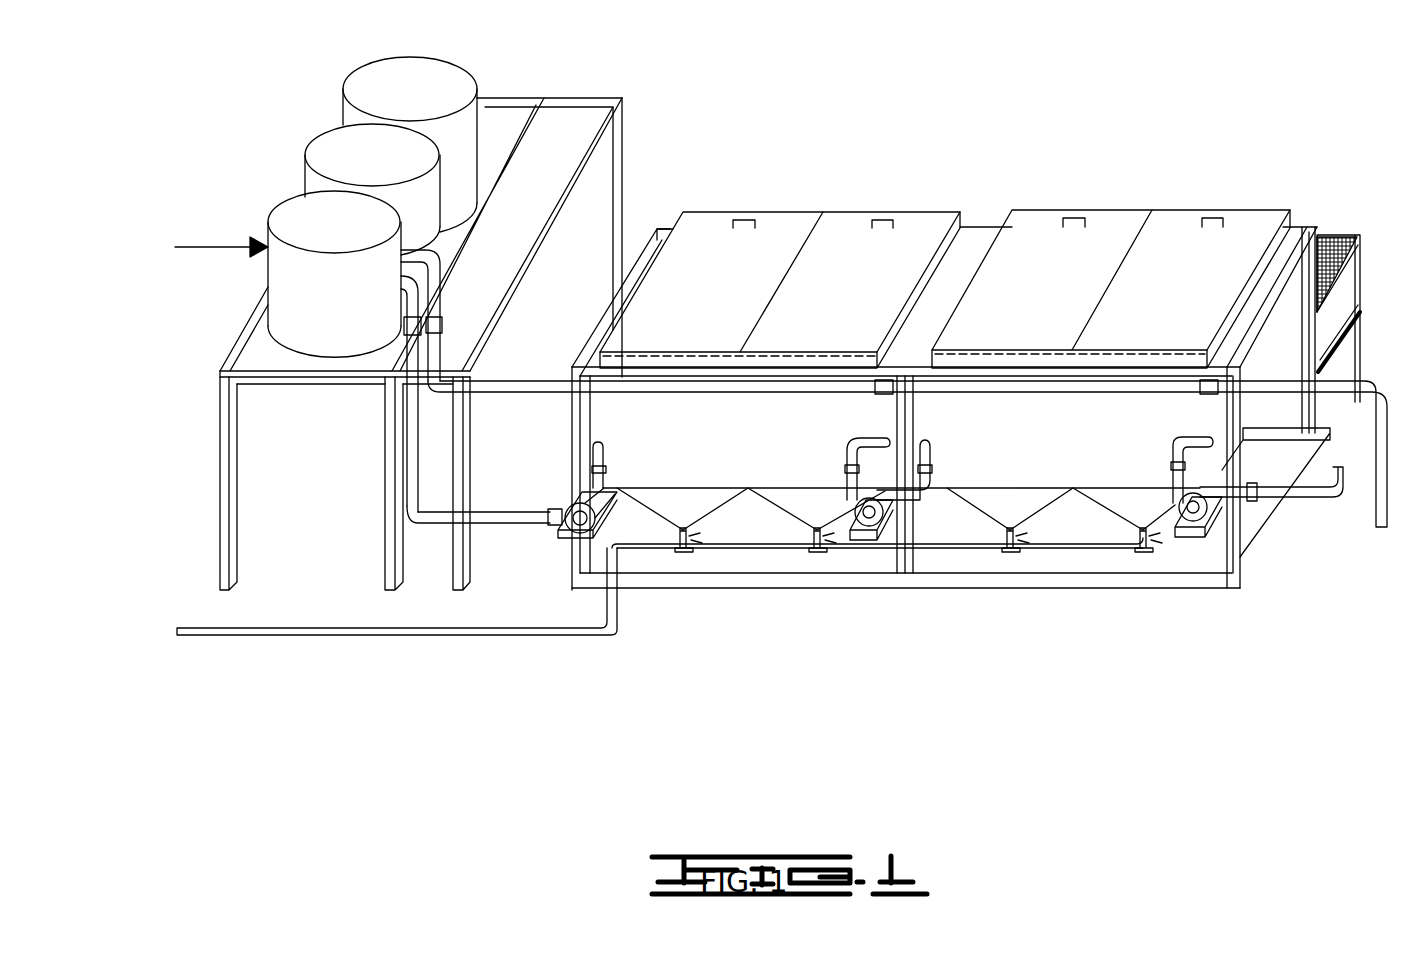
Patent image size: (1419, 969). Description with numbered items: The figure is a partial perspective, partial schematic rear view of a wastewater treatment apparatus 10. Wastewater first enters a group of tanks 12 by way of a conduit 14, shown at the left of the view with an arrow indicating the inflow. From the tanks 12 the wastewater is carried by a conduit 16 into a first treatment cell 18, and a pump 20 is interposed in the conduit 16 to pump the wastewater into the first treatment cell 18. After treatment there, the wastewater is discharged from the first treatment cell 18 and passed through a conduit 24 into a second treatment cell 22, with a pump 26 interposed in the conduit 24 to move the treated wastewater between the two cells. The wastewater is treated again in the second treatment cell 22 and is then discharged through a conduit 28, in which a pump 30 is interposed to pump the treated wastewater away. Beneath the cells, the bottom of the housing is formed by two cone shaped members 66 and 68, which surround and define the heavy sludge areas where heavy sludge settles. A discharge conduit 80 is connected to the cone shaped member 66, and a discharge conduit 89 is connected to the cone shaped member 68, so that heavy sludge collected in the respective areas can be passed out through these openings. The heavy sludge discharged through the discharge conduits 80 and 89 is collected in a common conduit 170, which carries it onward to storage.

The wastewater treatment apparatus 10 is at (893, 189).
The tanks 12 is at (286, 190).
The conduit 14 is at (213, 252).
The conduit 16 is at (494, 530).
The first treatment cell 18 is at (765, 227).
The pump 20 is at (572, 537).
The second treatment cell 22 is at (1102, 226).
The conduit 24 is at (943, 495).
The pump 26 is at (868, 538).
The conduit 28 is at (1258, 500).
The pump 30 is at (1193, 535).
The cone shaped member 66 is at (618, 500).
The cone shaped member 68 is at (747, 498).
The discharge conduit 80 is at (683, 526).
The discharge conduit 89 is at (815, 526).
The common conduit 170 is at (633, 640).